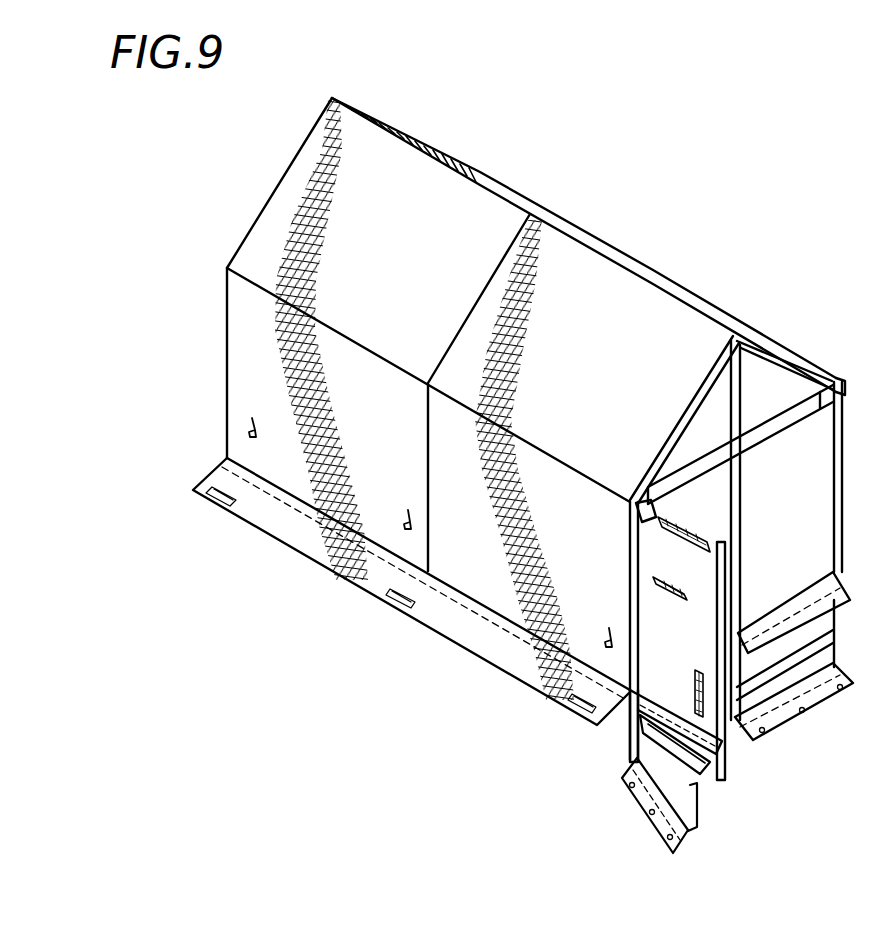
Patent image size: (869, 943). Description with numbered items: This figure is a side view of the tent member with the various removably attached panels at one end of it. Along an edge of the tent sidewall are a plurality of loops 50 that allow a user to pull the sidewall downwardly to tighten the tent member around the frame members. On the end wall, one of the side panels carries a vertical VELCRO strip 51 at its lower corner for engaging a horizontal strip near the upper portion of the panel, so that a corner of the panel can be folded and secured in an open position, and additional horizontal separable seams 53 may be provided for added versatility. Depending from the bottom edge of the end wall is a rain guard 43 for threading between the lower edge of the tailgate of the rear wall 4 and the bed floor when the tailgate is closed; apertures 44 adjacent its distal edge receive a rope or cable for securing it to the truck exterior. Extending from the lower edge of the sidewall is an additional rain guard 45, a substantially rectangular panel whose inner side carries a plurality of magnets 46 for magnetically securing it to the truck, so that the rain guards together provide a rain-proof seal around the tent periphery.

The rear wall 4 is at (803, 713).
The rain guard 43 is at (643, 742).
The apertures 44 is at (657, 833).
The rain guard 45 is at (387, 608).
The magnets 46 is at (392, 593).
The loops 50 is at (408, 520).
The vertical VELCRO strip 51 is at (663, 592).
The horizontal separable seams 53 is at (699, 774).